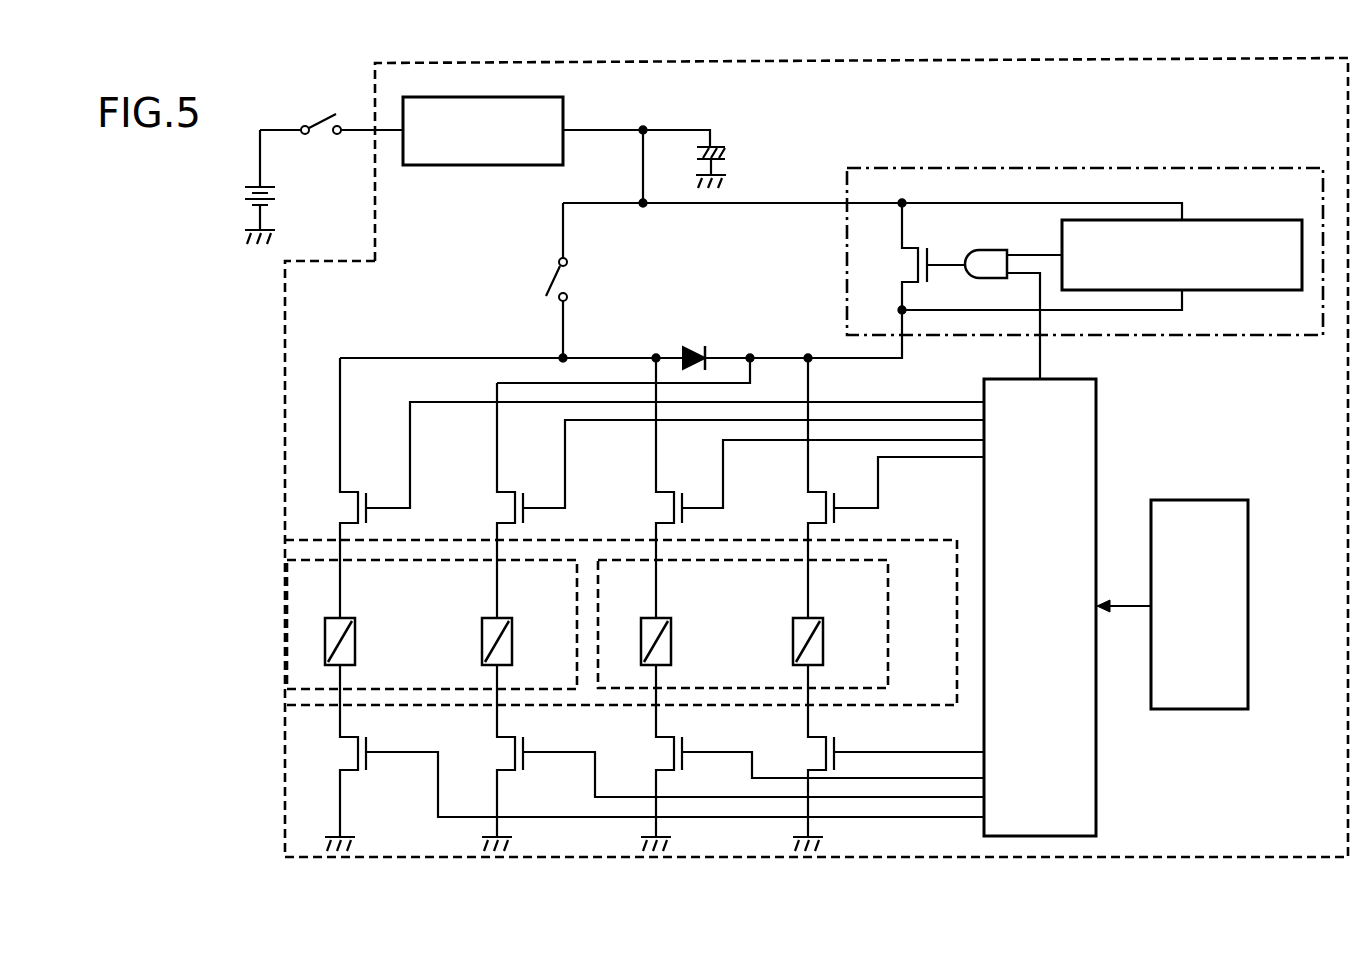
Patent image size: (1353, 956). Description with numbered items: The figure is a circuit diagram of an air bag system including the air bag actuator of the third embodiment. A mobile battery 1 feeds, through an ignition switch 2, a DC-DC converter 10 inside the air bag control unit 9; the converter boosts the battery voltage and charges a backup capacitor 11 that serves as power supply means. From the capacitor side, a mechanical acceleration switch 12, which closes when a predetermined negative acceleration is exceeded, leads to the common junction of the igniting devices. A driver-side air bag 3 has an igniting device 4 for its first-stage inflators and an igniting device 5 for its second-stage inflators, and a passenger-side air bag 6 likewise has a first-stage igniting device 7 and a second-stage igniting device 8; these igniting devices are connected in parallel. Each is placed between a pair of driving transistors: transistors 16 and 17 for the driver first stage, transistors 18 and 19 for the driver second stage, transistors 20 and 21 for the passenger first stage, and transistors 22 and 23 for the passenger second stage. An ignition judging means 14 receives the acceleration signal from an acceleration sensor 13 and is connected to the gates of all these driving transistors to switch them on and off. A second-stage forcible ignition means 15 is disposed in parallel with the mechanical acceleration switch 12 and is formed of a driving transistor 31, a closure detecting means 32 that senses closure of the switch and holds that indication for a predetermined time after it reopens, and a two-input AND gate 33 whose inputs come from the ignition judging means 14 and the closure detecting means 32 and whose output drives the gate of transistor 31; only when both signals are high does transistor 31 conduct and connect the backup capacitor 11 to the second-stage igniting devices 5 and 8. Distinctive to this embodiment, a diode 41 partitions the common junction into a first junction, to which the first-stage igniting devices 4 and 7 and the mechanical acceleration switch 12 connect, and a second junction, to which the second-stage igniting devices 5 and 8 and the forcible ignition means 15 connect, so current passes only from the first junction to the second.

The mobile battery 1 is at (238, 203).
The ignition switch 2 is at (319, 114).
The driver-side air bag 3 is at (282, 598).
The igniting device for the first-stage inflators 4 is at (357, 638).
The igniting device for the second-stage inflators 5 is at (514, 638).
The passenger-side air bag 6 is at (892, 590).
The igniting device for the first-stage inflators 7 is at (673, 638).
The igniting device for the second-stage inflators 8 is at (825, 638).
The air bag control unit 9 is at (282, 333).
The DC-DC converter 10 is at (483, 166).
The backup capacitor 11 is at (735, 153).
The mechanical acceleration switch 12 is at (572, 280).
The acceleration sensor 13 is at (1200, 498).
The ignition judging means 14 is at (1098, 444).
The second-stage forcible ignition means 15 is at (1133, 167).
The driving transistor 16 is at (371, 489).
The driving transistor 17 is at (375, 751).
The driving transistor 18 is at (526, 489).
The driving transistor 19 is at (531, 751).
The driving transistor 20 is at (685, 489).
The driving transistor 21 is at (690, 749).
The driving transistor 22 is at (838, 489).
The driving transistor 23 is at (846, 749).
The driving transistor 31 is at (942, 253).
The closure detecting means 32 is at (1262, 219).
The two-input AND gate 33 is at (998, 252).
The diode 41 is at (695, 345).